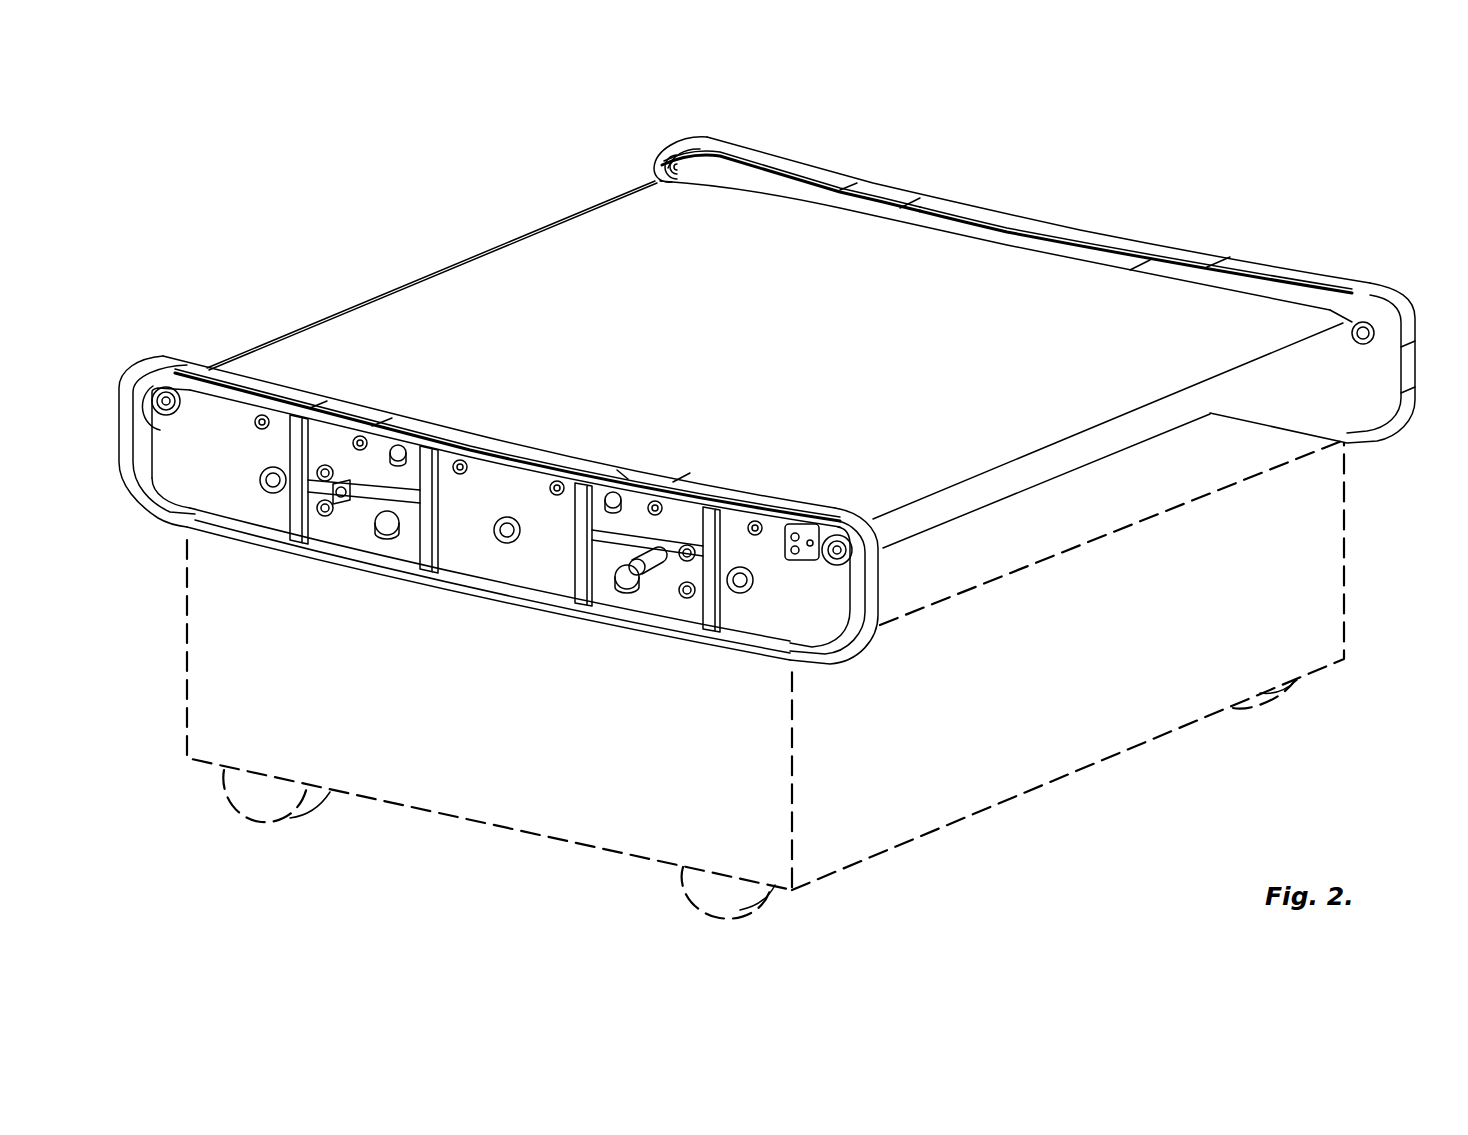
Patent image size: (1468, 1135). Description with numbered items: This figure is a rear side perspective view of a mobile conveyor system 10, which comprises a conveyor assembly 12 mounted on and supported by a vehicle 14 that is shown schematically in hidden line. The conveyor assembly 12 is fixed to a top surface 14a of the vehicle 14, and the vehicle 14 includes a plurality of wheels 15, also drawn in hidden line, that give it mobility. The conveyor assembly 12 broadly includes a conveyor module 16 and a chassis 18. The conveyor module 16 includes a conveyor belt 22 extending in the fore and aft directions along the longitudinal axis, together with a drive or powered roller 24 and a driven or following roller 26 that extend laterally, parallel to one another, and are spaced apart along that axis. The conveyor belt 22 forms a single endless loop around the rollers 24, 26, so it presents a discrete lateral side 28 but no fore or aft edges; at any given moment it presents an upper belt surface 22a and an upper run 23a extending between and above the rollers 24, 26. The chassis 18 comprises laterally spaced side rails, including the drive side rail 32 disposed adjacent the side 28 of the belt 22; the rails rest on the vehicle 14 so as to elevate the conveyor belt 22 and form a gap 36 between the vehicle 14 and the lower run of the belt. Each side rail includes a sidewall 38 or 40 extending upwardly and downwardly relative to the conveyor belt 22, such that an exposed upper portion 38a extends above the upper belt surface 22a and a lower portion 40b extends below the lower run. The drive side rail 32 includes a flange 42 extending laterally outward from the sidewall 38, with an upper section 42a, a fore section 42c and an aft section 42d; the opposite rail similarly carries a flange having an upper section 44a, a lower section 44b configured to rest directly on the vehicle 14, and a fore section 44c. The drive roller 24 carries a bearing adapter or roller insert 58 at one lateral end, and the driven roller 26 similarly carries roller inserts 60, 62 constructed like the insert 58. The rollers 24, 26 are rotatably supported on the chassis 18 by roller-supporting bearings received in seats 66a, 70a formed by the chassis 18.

The mobile conveyor system 10 is at (1215, 136).
The conveyor assembly 12 is at (484, 243).
The vehicle 14 is at (765, 665).
The top surface 14a is at (1093, 500).
The wheels 15 is at (263, 802).
The conveyor module 16 is at (1255, 330).
The chassis 18 is at (1223, 250).
The conveyor belt 22 is at (905, 245).
The upper belt surface 22a is at (760, 216).
The upper run 23a is at (1000, 270).
The drive roller 24 is at (163, 420).
The driven roller 26 is at (827, 565).
The lateral side 28 is at (1130, 272).
The first side rail 32 is at (1019, 206).
The gap 36 is at (1000, 528).
The sidewall 38 is at (710, 168).
The exposed upper portion 38a is at (955, 225).
The sidewall 40 is at (457, 550).
The lower portion 40b is at (500, 570).
The flange 42 is at (872, 183).
The upper section 42a is at (1085, 238).
The fore section 42c is at (627, 136).
The aft section 42d is at (1333, 366).
The upper section 44a is at (884, 582).
The lower section 44b is at (623, 605).
The fore section 44c is at (157, 444).
The roller insert 58 is at (177, 410).
The roller insert 60 is at (1370, 330).
The roller insert 62 is at (847, 540).
The seat 66a is at (830, 570).
The seat 70a is at (162, 412).